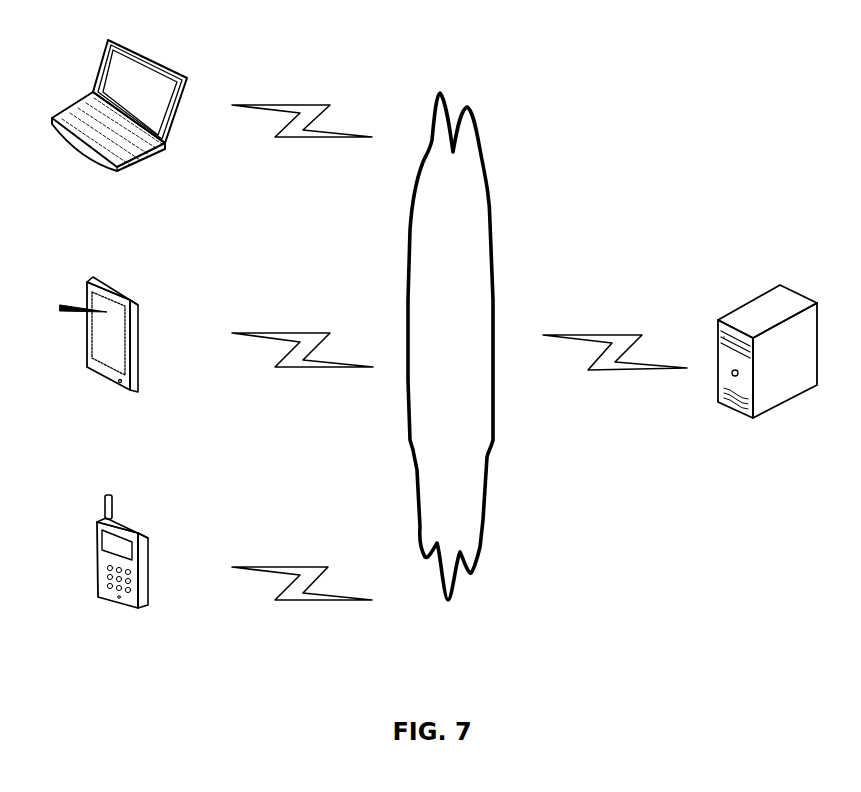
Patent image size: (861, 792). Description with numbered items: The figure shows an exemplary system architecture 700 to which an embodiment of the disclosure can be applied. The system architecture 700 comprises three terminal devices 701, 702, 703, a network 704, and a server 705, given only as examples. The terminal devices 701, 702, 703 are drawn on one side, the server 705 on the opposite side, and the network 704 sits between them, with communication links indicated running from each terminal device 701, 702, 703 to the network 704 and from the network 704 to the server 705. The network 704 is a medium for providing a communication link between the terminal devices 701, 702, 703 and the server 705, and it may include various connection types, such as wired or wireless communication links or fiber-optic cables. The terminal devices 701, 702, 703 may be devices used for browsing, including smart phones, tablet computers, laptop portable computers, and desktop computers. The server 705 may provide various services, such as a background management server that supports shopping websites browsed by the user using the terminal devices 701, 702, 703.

The system architecture 700 is at (678, 32).
The terminal device 701 is at (122, 570).
The terminal device 702 is at (99, 355).
The terminal device 703 is at (119, 123).
The network 704 is at (450, 346).
The server 705 is at (767, 372).